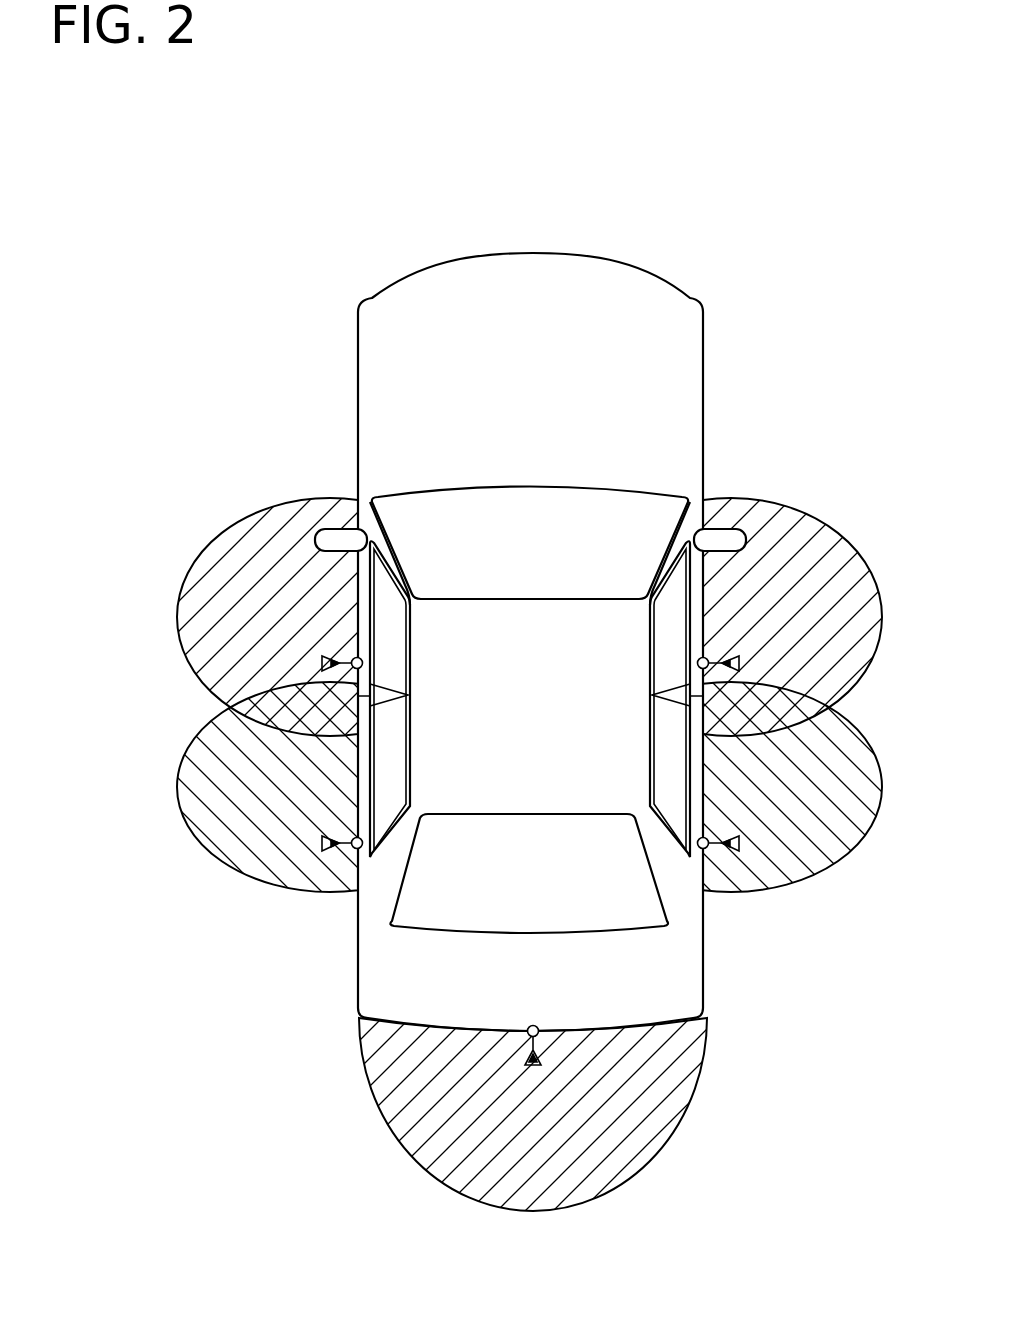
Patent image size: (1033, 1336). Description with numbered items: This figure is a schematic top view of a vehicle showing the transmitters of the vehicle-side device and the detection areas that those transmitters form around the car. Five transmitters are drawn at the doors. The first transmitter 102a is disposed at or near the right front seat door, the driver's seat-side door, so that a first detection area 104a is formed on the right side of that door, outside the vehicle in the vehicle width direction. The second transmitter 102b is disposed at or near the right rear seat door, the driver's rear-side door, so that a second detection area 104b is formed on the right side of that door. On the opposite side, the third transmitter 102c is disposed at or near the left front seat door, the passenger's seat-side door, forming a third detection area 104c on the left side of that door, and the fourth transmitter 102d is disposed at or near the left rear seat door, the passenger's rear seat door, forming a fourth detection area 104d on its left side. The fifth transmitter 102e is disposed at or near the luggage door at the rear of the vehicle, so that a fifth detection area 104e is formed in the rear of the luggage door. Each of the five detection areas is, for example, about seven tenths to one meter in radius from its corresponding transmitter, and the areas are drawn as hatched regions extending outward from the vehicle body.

The first transmitter 102a is at (703, 658).
The second transmitter 102b is at (703, 848).
The third transmitter 102c is at (358, 658).
The fourth transmitter 102d is at (358, 848).
The fifth transmitter 102e is at (532, 1026).
The first detection area 104a is at (813, 518).
The second detection area 104b is at (851, 722).
The third detection area 104c is at (241, 519).
The fourth detection area 104d is at (210, 722).
The fifth detection area 104e is at (647, 1173).